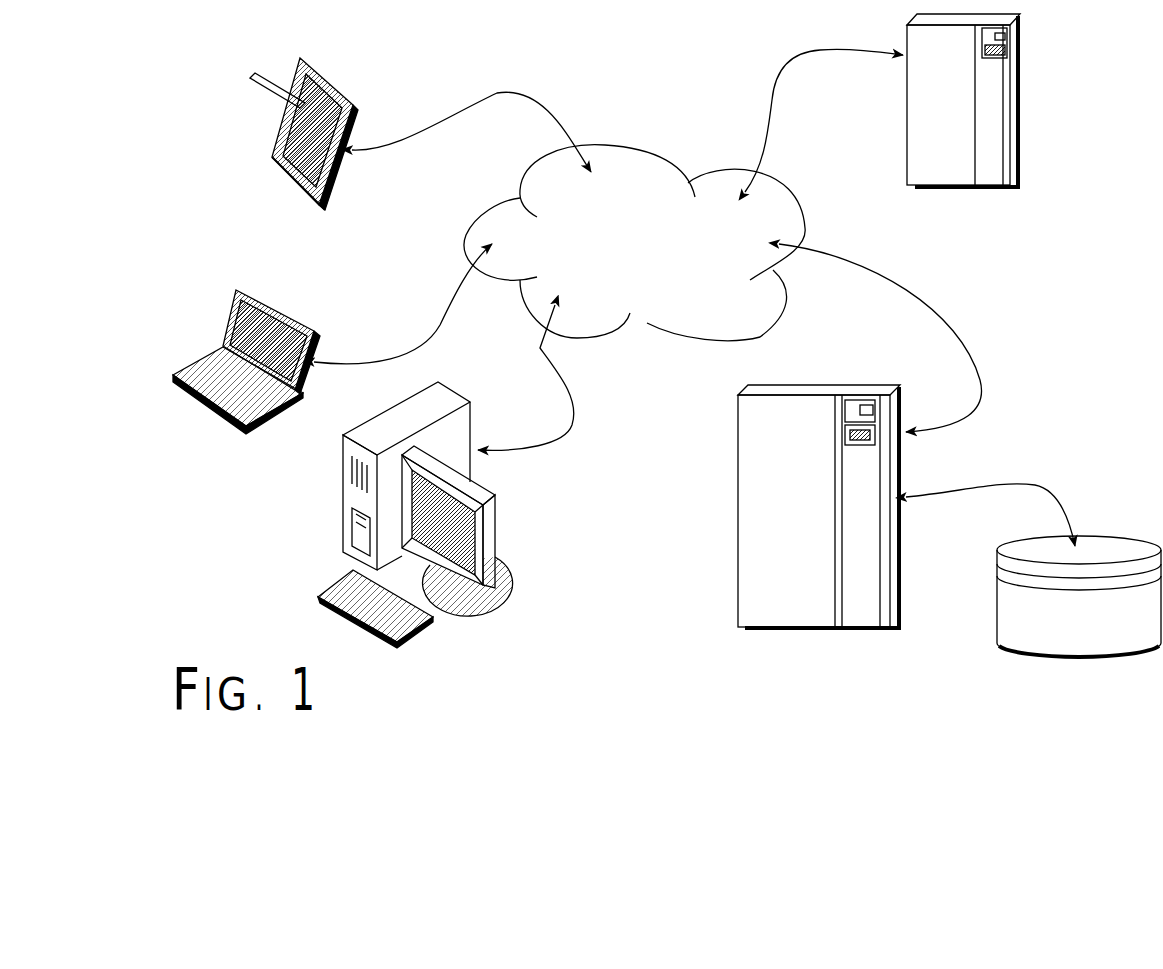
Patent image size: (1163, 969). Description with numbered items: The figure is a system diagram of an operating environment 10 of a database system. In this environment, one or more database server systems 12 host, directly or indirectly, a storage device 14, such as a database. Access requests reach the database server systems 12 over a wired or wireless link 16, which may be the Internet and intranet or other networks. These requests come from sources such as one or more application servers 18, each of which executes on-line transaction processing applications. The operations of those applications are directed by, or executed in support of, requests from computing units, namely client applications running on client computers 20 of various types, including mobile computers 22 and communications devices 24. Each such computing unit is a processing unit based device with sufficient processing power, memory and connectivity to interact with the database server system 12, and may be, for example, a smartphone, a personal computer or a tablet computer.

The operating environment 10 is at (495, 697).
The database server system 12 is at (738, 483).
The storage device 14 is at (1108, 532).
The wired or wireless link 16 is at (729, 324).
The application server 18 is at (907, 103).
The client computer 20 is at (497, 505).
The mobile computer 22 is at (306, 324).
The communications device 24 is at (342, 96).